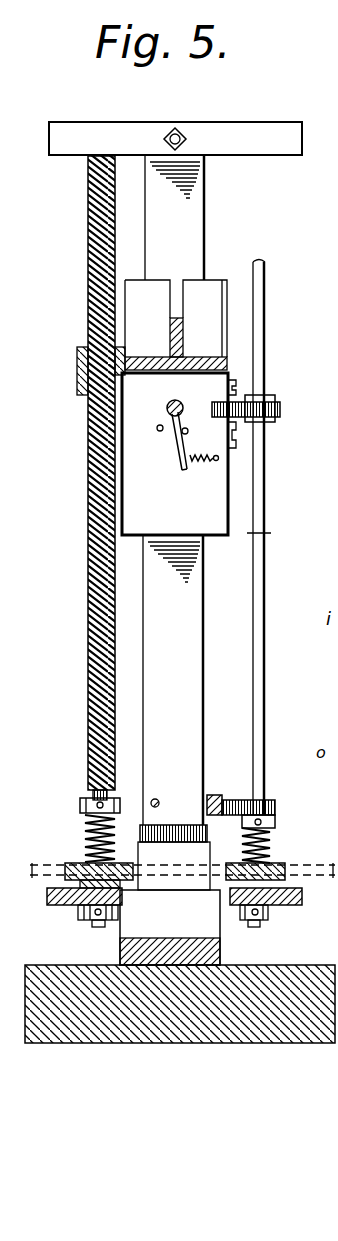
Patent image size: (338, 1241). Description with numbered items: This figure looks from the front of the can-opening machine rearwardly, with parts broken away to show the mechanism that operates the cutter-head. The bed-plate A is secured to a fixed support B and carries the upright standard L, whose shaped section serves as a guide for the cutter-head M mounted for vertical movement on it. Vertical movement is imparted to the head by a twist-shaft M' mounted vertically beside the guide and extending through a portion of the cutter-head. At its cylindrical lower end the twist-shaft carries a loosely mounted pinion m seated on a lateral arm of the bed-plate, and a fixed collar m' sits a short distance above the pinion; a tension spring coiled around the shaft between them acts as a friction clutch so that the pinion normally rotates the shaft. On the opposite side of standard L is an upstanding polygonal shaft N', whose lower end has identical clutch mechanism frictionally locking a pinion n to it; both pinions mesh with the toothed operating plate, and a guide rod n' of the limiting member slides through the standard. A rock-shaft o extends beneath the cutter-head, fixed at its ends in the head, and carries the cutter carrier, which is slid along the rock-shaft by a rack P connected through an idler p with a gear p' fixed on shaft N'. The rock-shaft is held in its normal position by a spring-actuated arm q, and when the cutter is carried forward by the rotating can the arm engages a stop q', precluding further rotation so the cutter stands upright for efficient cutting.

The standard L is at (195, 652).
The cutter-head M is at (192, 294).
The twist-shaft M' is at (76, 478).
The upstanding shaft N' is at (278, 538).
The rack P is at (214, 410).
The rock-shaft o is at (163, 409).
The spring-actuated arm q is at (191, 479).
The stop q' is at (165, 443).
The idler p is at (272, 423).
The gear p' is at (263, 408).
The pinion m is at (80, 865).
The fixed collar m' is at (80, 792).
The pinion n is at (267, 853).
The guide rod n' is at (161, 787).
The bed-plate A is at (215, 936).
The fixed support B is at (200, 1035).